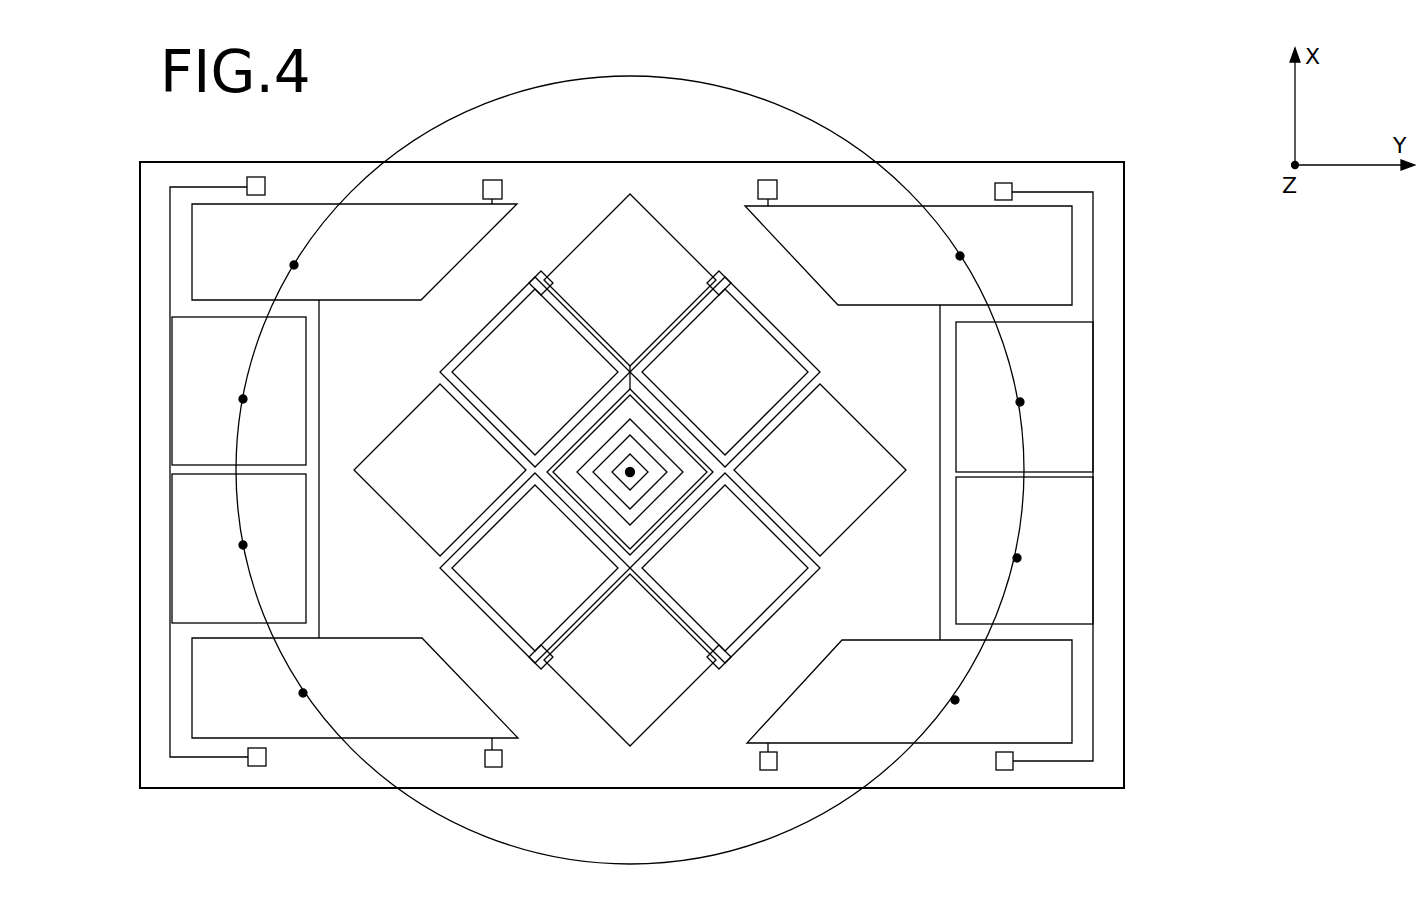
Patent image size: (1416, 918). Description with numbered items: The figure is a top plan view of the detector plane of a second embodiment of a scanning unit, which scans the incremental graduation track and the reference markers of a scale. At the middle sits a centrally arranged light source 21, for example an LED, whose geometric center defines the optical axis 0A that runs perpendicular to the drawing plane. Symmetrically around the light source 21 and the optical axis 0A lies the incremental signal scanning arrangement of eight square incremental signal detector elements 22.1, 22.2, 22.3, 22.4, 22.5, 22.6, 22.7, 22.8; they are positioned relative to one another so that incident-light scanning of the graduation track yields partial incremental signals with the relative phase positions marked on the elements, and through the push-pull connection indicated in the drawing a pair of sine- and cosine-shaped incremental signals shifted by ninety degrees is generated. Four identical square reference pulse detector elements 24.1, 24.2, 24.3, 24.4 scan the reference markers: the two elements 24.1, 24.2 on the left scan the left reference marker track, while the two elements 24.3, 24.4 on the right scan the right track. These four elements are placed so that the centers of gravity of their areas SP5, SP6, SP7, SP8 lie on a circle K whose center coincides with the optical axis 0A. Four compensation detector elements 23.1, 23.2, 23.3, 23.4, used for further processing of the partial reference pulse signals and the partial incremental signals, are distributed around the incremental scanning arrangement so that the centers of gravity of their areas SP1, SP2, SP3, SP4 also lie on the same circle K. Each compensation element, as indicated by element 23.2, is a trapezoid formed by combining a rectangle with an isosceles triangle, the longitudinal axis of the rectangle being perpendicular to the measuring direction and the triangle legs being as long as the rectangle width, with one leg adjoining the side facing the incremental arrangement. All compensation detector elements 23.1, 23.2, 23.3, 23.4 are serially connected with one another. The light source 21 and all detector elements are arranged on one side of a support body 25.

The light source 21 is at (630, 472).
The incremental signal detector element 22.1 is at (413, 462).
The incremental signal detector element 22.2 is at (502, 377).
The incremental signal detector element 22.3 is at (665, 268).
The incremental signal detector element 22.4 is at (767, 380).
The incremental signal detector element 22.5 is at (837, 450).
The incremental signal detector element 22.6 is at (742, 605).
The incremental signal detector element 22.7 is at (663, 688).
The incremental signal detector element 22.8 is at (497, 583).
The compensation detector element 23.1 is at (293, 728).
The compensation detector element 23.2 is at (307, 222).
The compensation detector element 23.3 is at (1052, 222).
The compensation detector element 23.4 is at (980, 732).
The reference pulse detector element 24.1 is at (188, 596).
The reference pulse detector element 24.2 is at (208, 335).
The reference pulse detector element 24.3 is at (1063, 437).
The reference pulse detector element 24.4 is at (1052, 535).
The support body 25 is at (940, 188).
The circle K is at (850, 807).
The optical axis 0A is at (630, 472).
The center of gravity of area SP1 is at (303, 693).
The center of gravity of area SP2 is at (294, 265).
The center of gravity of area SP3 is at (960, 256).
The center of gravity of area SP4 is at (955, 700).
The center of gravity of area SP5 is at (243, 545).
The center of gravity of area SP6 is at (243, 399).
The center of gravity of area SP7 is at (1020, 402).
The center of gravity of area SP8 is at (1017, 558).